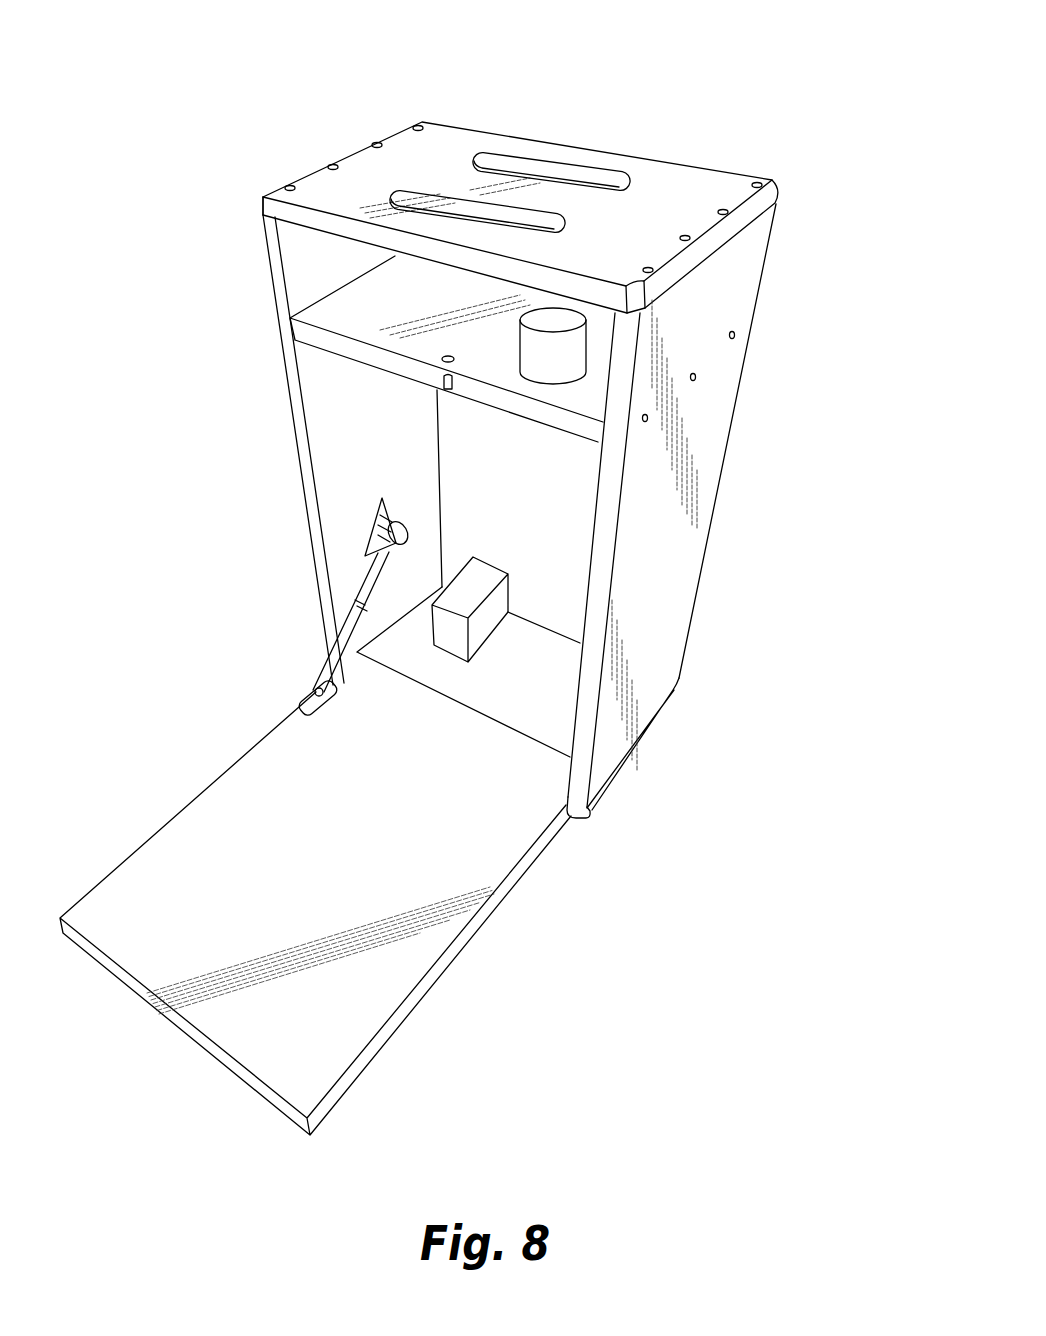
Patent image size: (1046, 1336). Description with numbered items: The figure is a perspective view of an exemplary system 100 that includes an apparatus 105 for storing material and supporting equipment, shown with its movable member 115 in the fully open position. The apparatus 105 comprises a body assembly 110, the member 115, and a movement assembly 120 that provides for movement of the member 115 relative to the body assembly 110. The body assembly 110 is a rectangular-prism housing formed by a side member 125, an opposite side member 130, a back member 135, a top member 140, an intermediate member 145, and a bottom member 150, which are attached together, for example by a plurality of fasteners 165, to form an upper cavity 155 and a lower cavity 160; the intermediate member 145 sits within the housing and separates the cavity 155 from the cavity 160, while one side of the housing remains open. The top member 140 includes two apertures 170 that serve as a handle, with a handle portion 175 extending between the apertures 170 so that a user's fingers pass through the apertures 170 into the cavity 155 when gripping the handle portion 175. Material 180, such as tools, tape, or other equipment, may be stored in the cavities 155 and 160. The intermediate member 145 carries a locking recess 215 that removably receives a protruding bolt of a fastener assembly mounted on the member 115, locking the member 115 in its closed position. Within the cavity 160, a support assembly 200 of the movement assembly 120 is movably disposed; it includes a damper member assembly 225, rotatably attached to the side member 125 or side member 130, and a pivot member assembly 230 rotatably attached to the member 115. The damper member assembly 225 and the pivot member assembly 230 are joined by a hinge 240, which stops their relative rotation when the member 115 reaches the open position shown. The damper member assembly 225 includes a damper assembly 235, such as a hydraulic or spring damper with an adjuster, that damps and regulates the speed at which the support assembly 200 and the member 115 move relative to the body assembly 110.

The system 100 is at (776, 82).
The apparatus 105 is at (796, 161).
The body assembly 110 is at (764, 327).
The member 115 is at (168, 868).
The movement assembly 120 is at (325, 716).
The side member 125 is at (332, 477).
The side member 130 is at (674, 452).
The back member 135 is at (507, 557).
The top member 140 is at (678, 197).
The intermediate member 145 is at (330, 322).
The bottom member 150 is at (532, 697).
The cavity 155 is at (360, 294).
The cavity 160 is at (546, 496).
The fasteners 165 is at (728, 213).
The apertures 170 is at (548, 168).
The handle portion 175 is at (470, 185).
The material 180 is at (567, 355).
The support assembly 200 is at (348, 575).
The locking recess 215 is at (447, 387).
The damper member assembly 225 is at (425, 525).
The pivot member assembly 230 is at (356, 666).
The damper assembly 235 is at (400, 528).
The hinge 240 is at (380, 614).